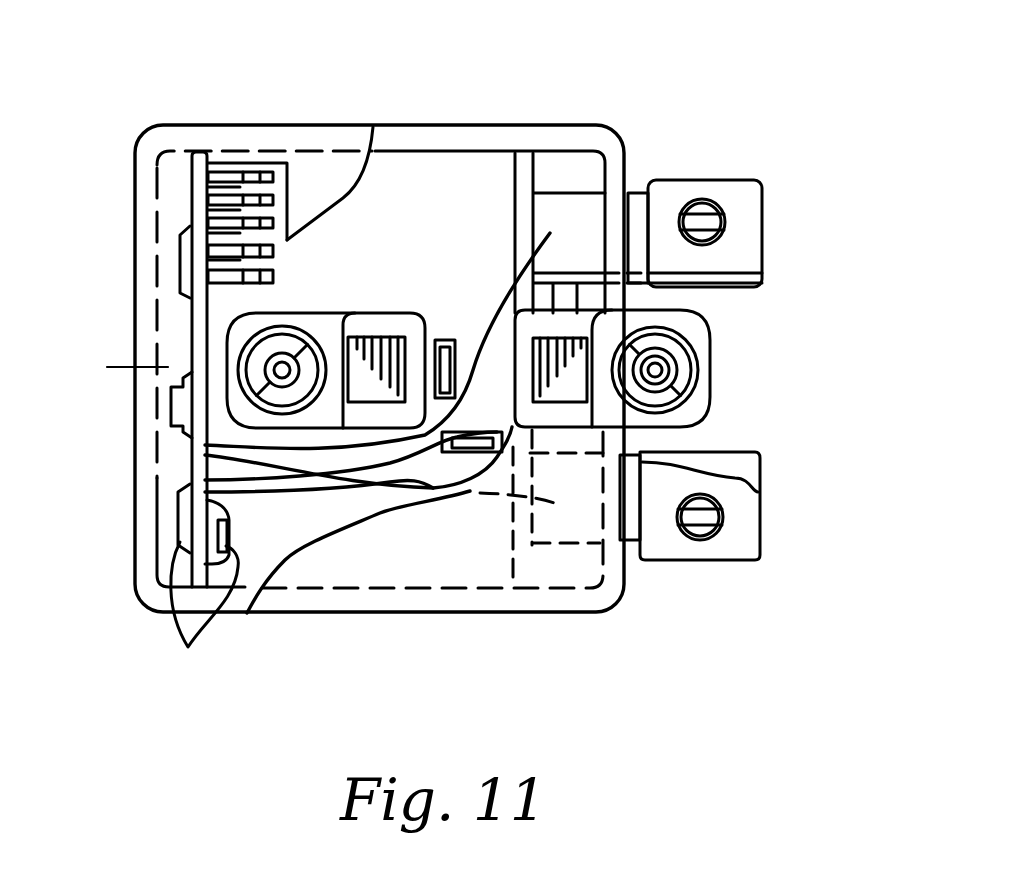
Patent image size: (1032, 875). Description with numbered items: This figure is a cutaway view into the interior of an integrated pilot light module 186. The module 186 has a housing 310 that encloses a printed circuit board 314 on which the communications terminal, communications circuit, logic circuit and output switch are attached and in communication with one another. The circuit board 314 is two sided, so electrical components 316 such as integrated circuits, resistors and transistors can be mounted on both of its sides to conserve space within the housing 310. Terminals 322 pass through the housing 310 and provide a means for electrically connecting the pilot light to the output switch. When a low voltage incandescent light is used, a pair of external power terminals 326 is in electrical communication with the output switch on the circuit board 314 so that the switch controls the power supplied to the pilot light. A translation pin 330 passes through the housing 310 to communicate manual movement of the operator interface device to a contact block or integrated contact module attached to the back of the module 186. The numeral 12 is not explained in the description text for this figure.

The integrated pilot light module 186 is at (565, 95).
The housing 310 is at (438, 132).
The printed circuit board 314 is at (197, 332).
The conductor 12 is at (107, 367).
The terminals 322 is at (444, 340).
The external power terminals 326 is at (748, 264).
The translation pin 330 is at (620, 320).
The electrical components 316 is at (195, 614).